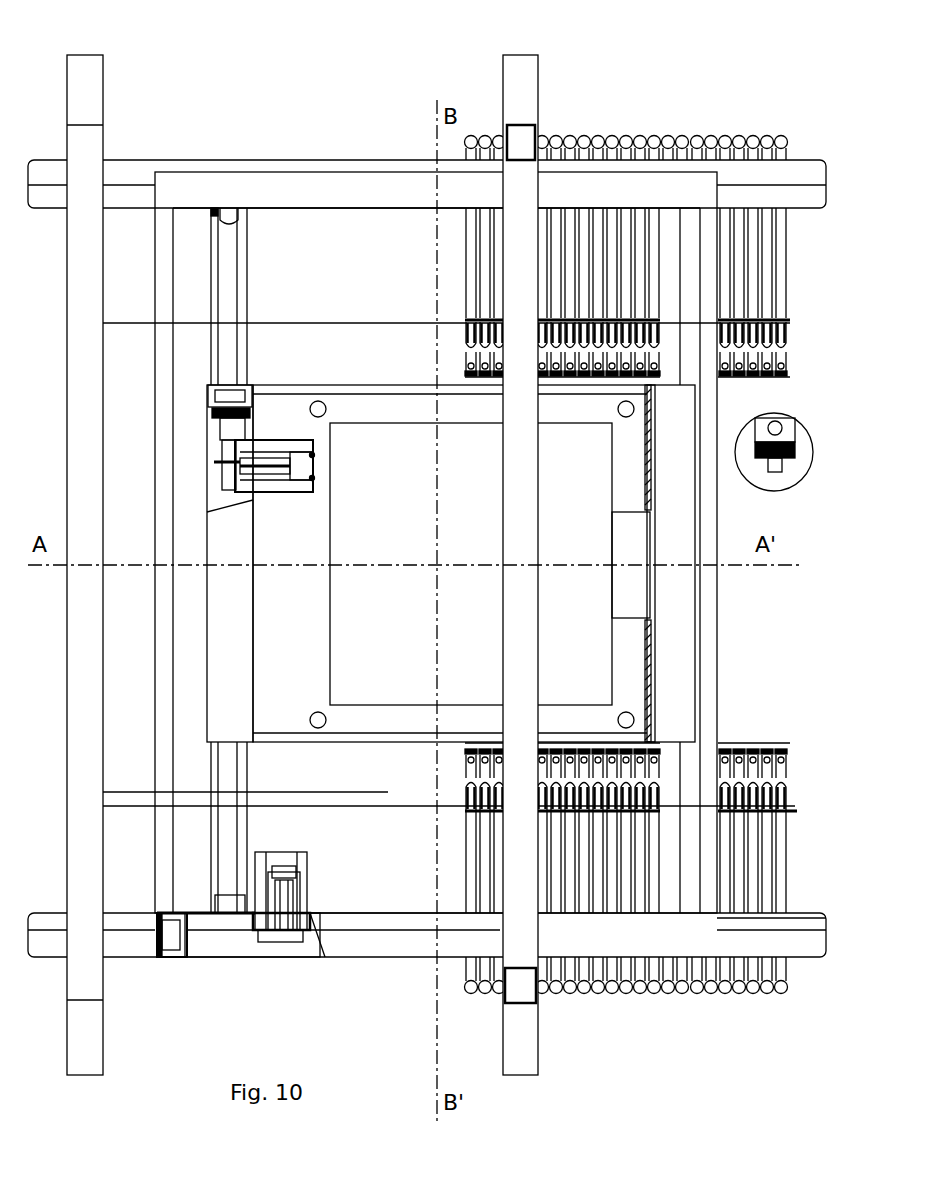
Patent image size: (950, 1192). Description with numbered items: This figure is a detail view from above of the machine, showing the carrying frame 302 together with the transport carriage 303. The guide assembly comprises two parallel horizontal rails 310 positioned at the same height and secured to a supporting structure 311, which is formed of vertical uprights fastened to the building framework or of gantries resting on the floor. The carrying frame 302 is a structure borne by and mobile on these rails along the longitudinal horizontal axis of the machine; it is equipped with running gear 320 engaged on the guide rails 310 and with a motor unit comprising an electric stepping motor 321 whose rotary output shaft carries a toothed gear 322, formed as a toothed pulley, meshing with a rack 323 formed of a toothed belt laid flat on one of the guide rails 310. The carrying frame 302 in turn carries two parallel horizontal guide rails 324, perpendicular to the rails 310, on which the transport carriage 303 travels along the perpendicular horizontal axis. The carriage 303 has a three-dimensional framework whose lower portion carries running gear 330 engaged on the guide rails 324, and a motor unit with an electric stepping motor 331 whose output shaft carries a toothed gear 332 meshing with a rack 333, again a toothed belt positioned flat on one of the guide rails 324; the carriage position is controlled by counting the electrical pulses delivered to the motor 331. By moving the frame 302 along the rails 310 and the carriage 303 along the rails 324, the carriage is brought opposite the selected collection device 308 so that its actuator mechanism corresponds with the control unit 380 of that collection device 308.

The carrying frame 302 is at (412, 942).
The transport carriage 303 is at (487, 549).
The collection device 308 is at (470, 322).
The horizontal rails 310 is at (130, 182).
The supporting structure 311 is at (82, 76).
The running gear 320 is at (156, 948).
The electric stepping motor 321 is at (300, 877).
The toothed gear 322 is at (305, 942).
The rack 323 is at (228, 937).
The guide rails 324 is at (232, 800).
The running gear 330 is at (201, 379).
The electric stepping motor 331 is at (277, 486).
The toothed gear 332 is at (198, 471).
The rack 333 is at (200, 424).
The control unit 380 is at (790, 472).